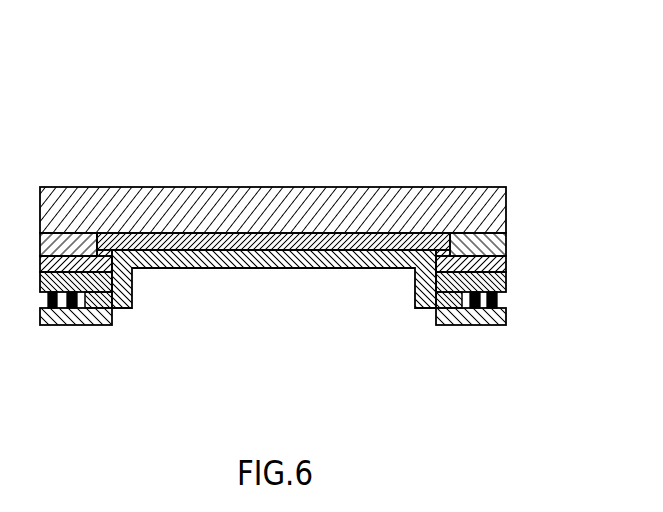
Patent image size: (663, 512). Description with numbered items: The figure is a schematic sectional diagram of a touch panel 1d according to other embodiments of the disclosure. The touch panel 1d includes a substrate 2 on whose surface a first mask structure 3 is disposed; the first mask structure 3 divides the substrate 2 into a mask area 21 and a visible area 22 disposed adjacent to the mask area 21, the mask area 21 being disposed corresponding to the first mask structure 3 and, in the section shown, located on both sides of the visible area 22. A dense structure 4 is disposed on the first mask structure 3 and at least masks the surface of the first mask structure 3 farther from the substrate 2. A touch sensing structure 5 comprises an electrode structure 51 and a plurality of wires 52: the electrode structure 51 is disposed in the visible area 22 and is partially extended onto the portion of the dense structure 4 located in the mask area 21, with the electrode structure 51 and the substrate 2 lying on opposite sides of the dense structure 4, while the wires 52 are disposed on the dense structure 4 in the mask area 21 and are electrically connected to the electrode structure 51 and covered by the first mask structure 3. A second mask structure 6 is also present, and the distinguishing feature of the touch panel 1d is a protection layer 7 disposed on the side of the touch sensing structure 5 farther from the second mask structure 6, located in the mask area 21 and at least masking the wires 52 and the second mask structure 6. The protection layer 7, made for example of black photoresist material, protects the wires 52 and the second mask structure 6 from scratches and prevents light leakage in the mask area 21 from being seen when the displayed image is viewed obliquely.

The touch panel 1d is at (111, 60).
The substrate 2 is at (506, 205).
The mask area 21 is at (112, 233).
The visible area 22 is at (436, 158).
The first mask structure 3 is at (506, 238).
The dense structure 4 is at (506, 265).
The touch sensing structure 5 is at (275, 340).
The electrode structure 51 is at (452, 305).
The wires 52 is at (428, 356).
The second mask structure 6 is at (506, 286).
The protection layer 7 is at (506, 318).